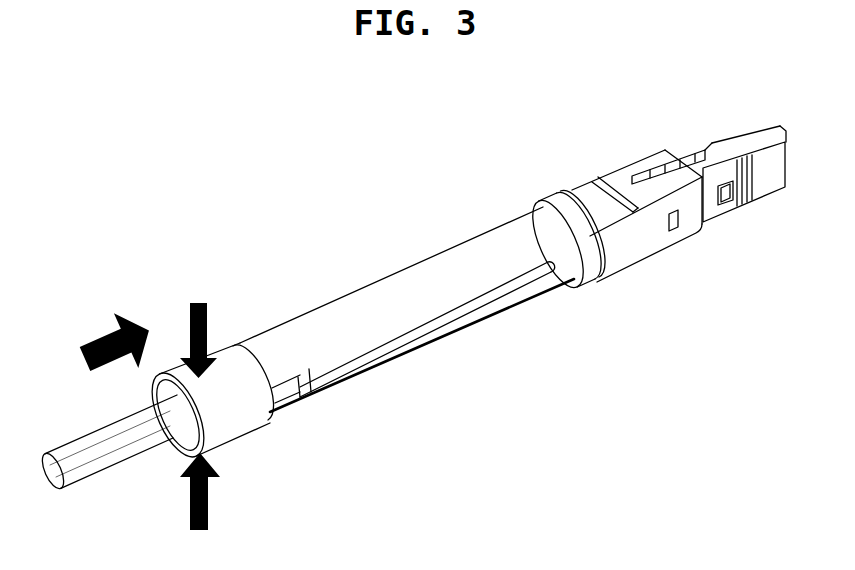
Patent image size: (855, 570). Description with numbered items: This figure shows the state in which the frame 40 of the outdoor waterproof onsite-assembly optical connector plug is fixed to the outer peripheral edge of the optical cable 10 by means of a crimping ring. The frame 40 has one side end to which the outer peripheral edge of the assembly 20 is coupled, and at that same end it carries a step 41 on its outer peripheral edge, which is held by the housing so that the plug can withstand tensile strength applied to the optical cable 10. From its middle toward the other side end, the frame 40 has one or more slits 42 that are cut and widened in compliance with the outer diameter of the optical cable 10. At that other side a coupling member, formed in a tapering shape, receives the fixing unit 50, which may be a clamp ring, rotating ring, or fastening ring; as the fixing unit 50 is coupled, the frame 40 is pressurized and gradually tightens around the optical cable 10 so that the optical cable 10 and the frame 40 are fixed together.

The optical cable 10 is at (62, 447).
The assembly 20 is at (710, 144).
The frame 40 is at (650, 243).
The step 41 is at (562, 194).
The slit 42 is at (493, 298).
The fixing unit 50 is at (230, 347).